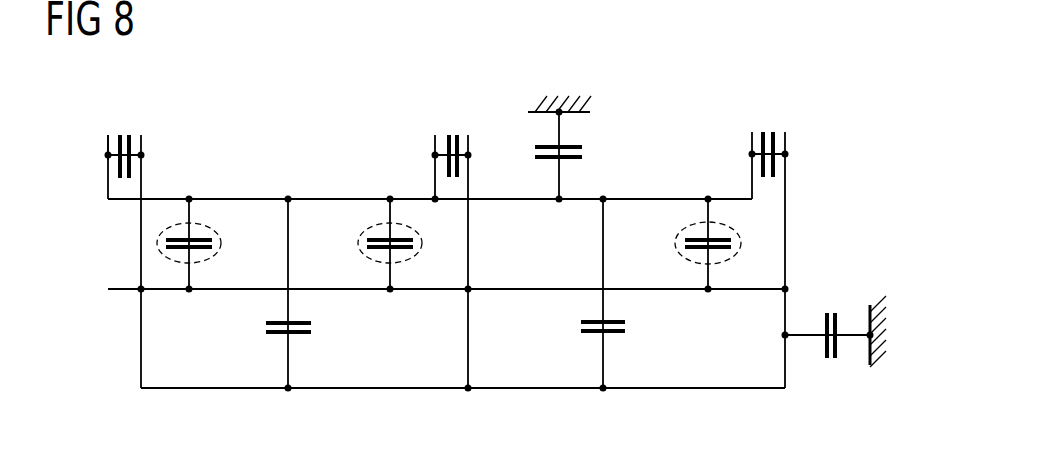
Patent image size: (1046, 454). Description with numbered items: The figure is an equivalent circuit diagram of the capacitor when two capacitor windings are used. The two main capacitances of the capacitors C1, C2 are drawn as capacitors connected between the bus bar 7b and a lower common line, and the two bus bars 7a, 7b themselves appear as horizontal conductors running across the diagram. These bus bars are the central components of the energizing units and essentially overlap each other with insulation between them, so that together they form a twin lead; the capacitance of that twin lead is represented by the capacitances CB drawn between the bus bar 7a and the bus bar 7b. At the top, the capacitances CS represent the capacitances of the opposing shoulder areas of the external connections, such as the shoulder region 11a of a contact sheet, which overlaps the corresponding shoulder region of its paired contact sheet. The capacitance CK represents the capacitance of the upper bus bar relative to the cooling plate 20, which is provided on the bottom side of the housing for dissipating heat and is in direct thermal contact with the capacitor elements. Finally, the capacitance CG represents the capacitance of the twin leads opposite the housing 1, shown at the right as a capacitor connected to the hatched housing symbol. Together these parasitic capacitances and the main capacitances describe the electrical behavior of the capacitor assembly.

The housing 1 is at (883, 296).
The cooling plate 20 is at (570, 108).
The bus bar 7a is at (265, 198).
The bus bar 7b is at (530, 292).
The shoulder region 11a is at (108, 140).
The capacitance of opposing shoulder areas CS is at (133, 137).
The capacitance of the twin lead CB is at (205, 260).
The capacitance of the upper bus bar relative to the cooling plate CK is at (582, 146).
The capacitance of the twin leads opposite the housing CG is at (835, 352).
The main capacitance of the capacitor C1 is at (311, 333).
The main capacitance of the capacitor C2 is at (625, 333).